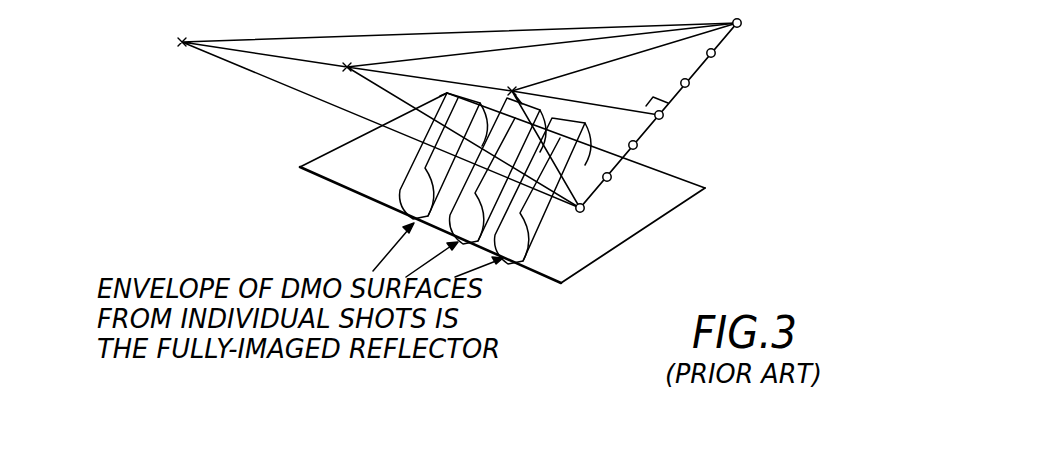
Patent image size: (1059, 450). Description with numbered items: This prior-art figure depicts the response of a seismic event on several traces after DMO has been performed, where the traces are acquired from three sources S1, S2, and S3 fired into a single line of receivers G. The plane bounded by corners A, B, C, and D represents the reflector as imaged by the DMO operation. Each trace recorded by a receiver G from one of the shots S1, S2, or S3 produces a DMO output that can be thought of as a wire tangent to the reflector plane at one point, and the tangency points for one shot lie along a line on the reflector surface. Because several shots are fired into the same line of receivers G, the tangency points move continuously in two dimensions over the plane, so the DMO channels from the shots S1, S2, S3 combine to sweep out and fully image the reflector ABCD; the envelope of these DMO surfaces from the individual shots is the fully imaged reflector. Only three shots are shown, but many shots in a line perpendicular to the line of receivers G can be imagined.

The first source S1 is at (439, 115).
The second source S2 is at (534, 115).
The third source S3 is at (617, 115).
The receivers G is at (671, 118).
The reflector corner A is at (417, 188).
The reflector corner B is at (630, 251).
The reflector corner C is at (585, 147).
The reflector corner D is at (449, 82).